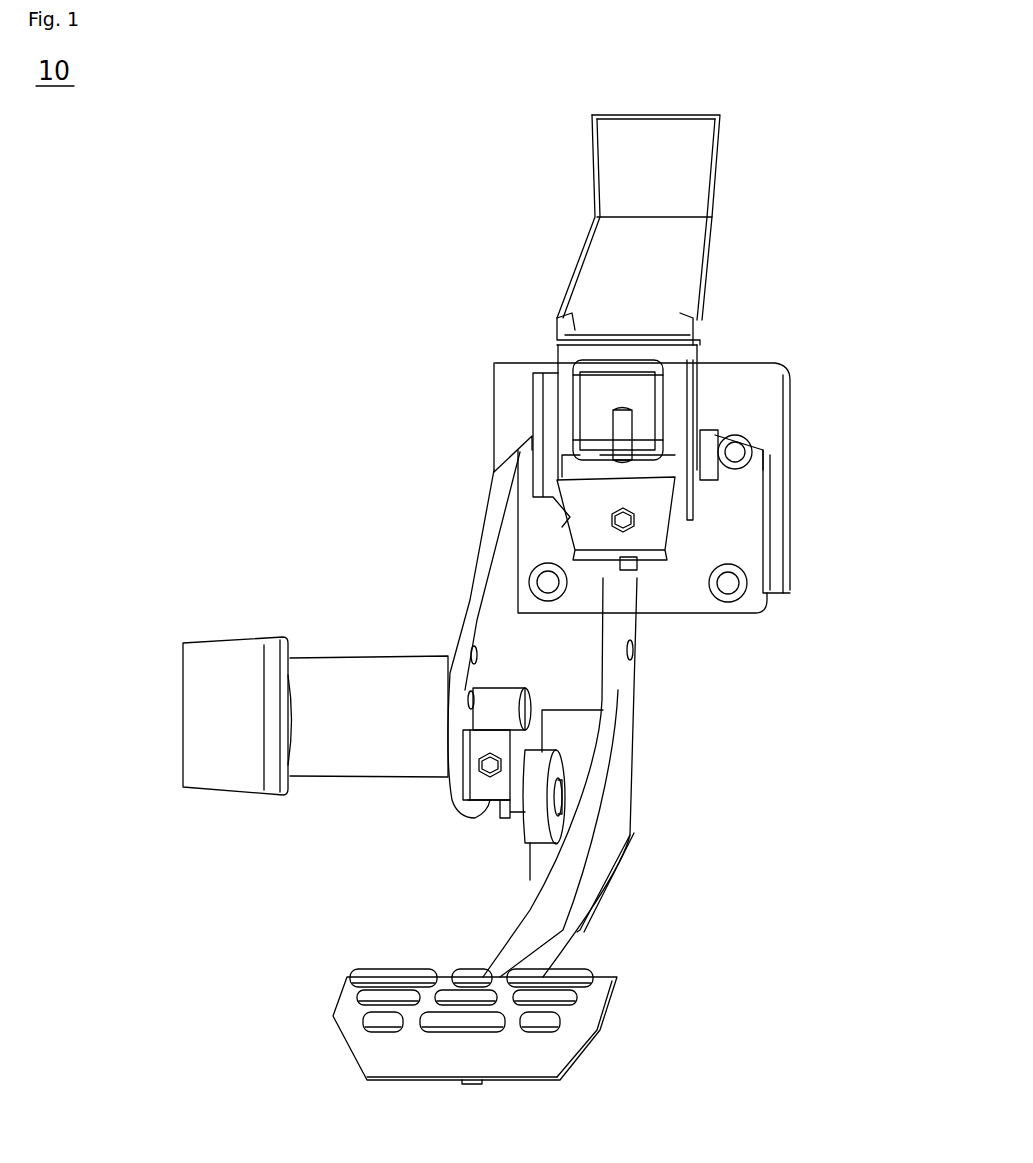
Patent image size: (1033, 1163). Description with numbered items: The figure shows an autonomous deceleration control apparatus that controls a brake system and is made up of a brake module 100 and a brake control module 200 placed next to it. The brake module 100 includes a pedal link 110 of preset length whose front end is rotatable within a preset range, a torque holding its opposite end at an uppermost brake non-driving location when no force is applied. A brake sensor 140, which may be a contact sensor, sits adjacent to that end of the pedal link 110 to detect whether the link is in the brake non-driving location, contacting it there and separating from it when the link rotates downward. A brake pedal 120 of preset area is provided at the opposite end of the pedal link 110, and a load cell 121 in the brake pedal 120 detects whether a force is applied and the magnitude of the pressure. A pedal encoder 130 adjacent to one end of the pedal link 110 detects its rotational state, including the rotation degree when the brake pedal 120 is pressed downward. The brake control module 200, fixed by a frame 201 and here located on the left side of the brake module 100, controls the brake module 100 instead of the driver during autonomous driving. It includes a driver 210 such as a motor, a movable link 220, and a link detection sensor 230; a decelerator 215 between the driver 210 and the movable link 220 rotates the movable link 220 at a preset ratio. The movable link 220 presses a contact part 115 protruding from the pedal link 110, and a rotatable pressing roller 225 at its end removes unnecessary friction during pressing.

The brake module 100 is at (647, 948).
The pedal link 110 is at (552, 878).
The contact part 115 is at (577, 737).
The brake pedal 120 is at (387, 1055).
The load cell 121 is at (387, 1017).
The pedal encoder 130 is at (790, 413).
The brake sensor 140 is at (623, 530).
The brake control module 200 is at (293, 462).
The frame 201 is at (490, 523).
The driver 210 is at (200, 708).
The decelerator 215 is at (367, 762).
The movable link 220 is at (523, 807).
The pressing roller 225 is at (537, 800).
The link detection sensor 230 is at (487, 777).